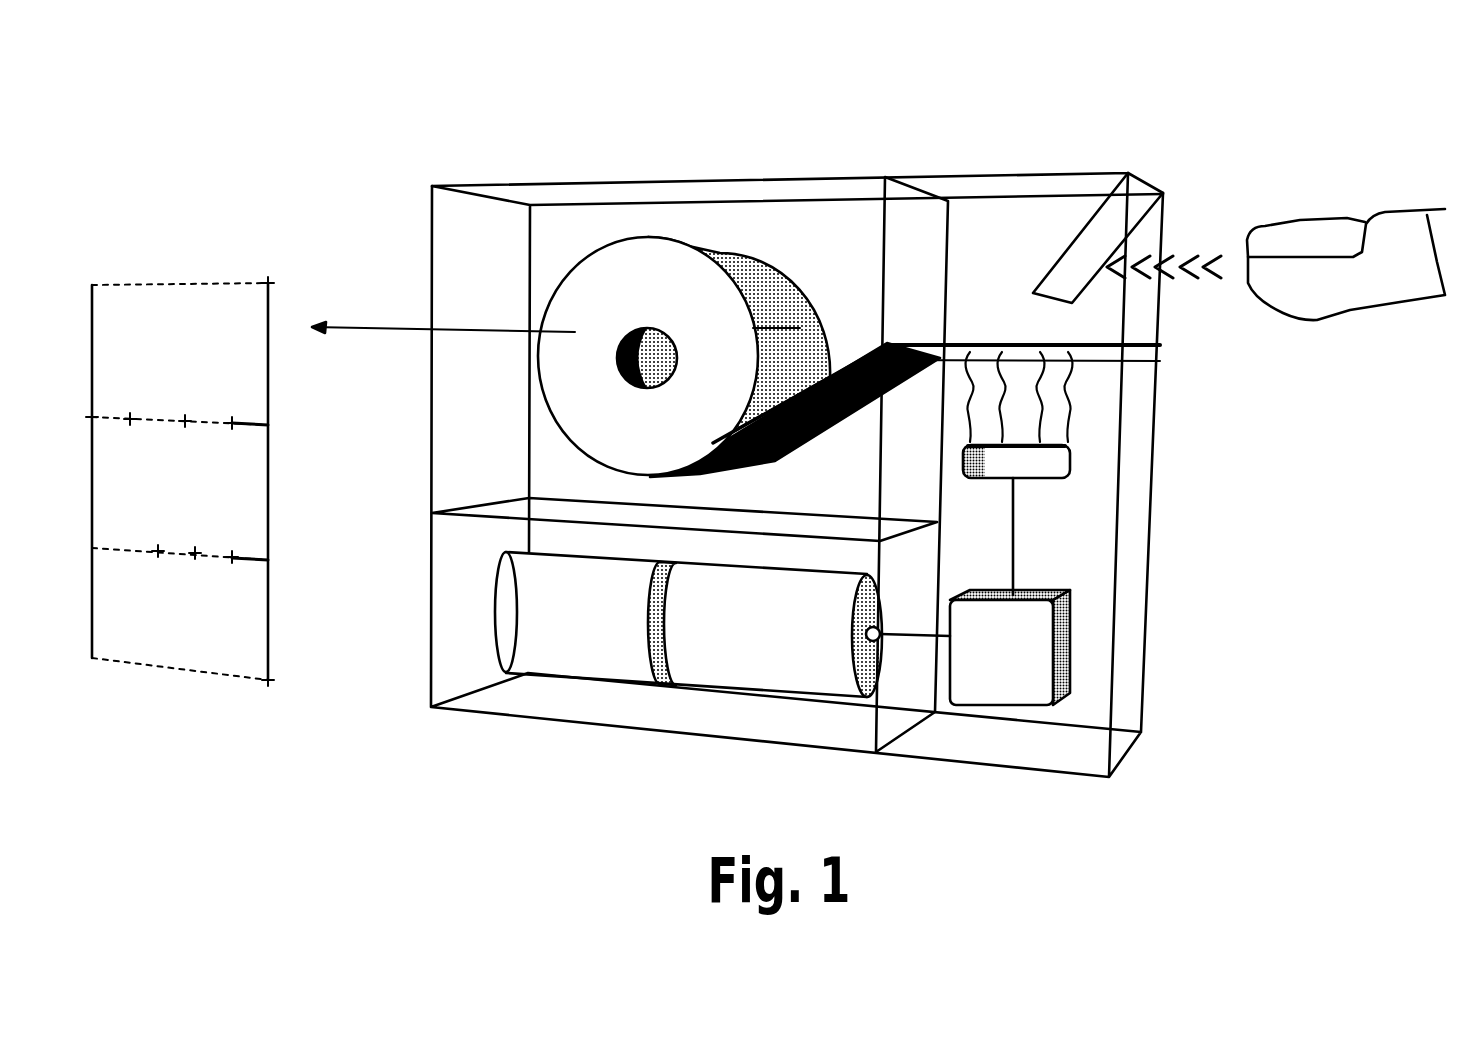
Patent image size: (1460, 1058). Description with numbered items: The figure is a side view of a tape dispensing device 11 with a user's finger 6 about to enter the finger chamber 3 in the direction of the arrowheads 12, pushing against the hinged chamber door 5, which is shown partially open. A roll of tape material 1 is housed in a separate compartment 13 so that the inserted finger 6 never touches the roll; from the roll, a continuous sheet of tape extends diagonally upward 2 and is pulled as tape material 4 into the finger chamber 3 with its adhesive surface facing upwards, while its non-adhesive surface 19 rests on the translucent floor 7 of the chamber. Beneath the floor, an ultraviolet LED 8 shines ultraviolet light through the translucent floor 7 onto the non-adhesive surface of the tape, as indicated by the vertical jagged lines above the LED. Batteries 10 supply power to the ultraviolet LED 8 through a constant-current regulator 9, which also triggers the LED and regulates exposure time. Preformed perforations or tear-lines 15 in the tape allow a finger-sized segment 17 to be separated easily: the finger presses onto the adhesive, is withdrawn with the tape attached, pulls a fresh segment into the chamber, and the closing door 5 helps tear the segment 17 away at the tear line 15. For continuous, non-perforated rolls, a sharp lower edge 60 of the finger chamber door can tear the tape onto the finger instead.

The roll of tape material 1 is at (632, 297).
The tape material extending diagonally upward 2 is at (852, 350).
The finger chamber 3 is at (983, 258).
The tape material 4 is at (997, 337).
The hinged chamber door 5 is at (1088, 245).
The user's finger 6 is at (1330, 303).
The translucent floor 7 is at (1112, 360).
The ultraviolet LED 8 is at (1027, 465).
The constant-current regulator 9 is at (1023, 667).
The batteries 10 is at (590, 668).
The dispensing device 11 is at (449, 165).
The arrowheads 12 is at (1190, 250).
The separate compartment 13 is at (553, 235).
The perforations or tear-lines 15 is at (782, 322).
The finger-sized segment 17 is at (222, 357).
The non-adhesive surface 19 is at (810, 420).
The sharp lower edge 60 is at (1057, 303).